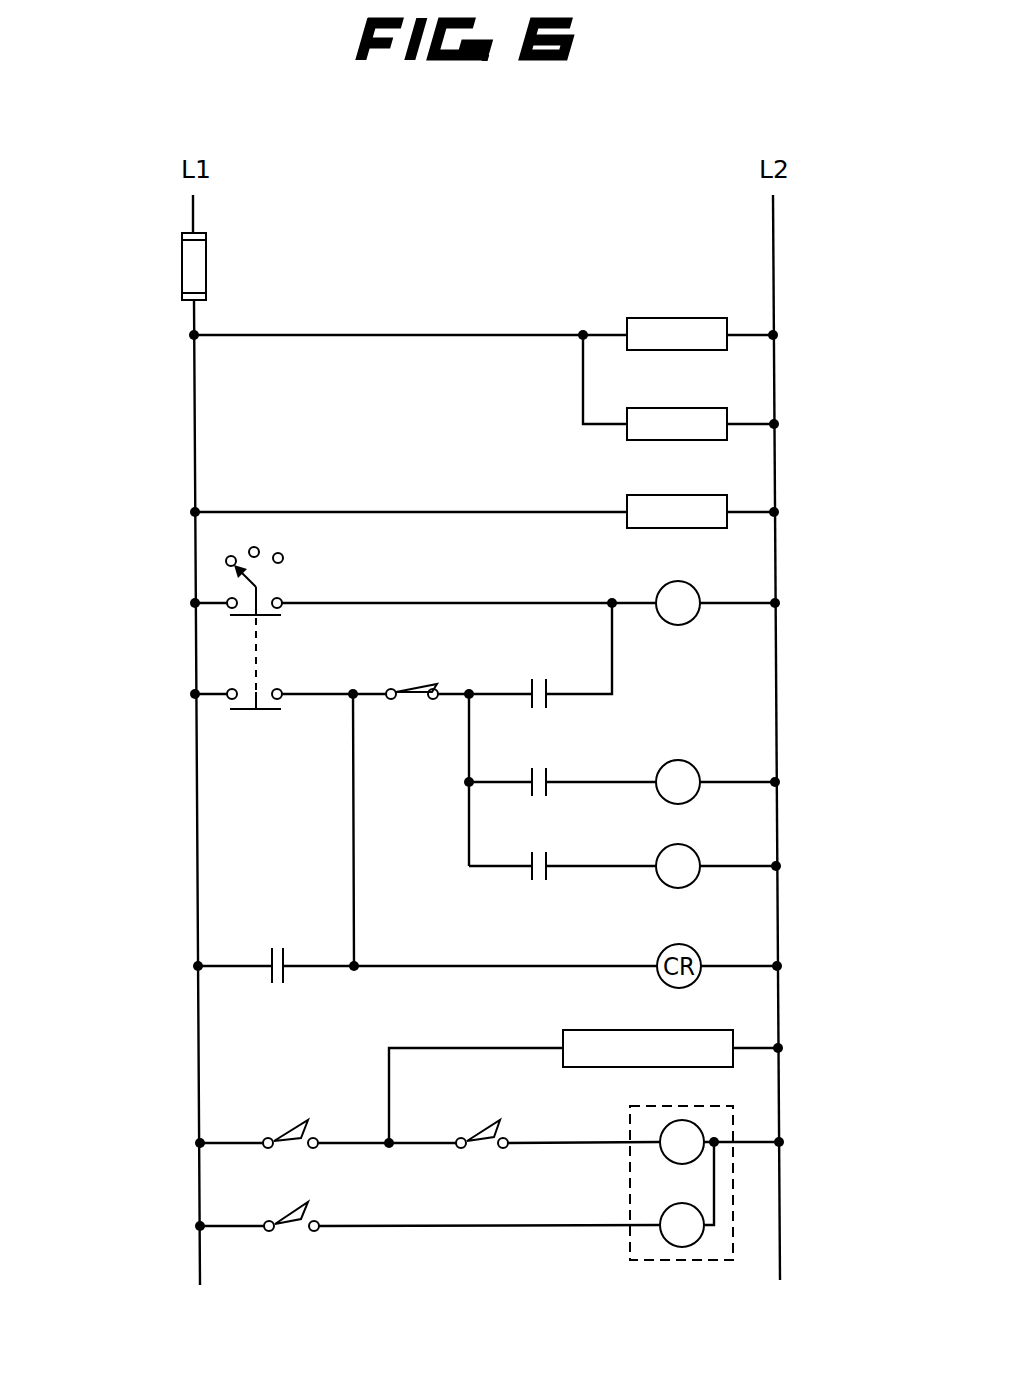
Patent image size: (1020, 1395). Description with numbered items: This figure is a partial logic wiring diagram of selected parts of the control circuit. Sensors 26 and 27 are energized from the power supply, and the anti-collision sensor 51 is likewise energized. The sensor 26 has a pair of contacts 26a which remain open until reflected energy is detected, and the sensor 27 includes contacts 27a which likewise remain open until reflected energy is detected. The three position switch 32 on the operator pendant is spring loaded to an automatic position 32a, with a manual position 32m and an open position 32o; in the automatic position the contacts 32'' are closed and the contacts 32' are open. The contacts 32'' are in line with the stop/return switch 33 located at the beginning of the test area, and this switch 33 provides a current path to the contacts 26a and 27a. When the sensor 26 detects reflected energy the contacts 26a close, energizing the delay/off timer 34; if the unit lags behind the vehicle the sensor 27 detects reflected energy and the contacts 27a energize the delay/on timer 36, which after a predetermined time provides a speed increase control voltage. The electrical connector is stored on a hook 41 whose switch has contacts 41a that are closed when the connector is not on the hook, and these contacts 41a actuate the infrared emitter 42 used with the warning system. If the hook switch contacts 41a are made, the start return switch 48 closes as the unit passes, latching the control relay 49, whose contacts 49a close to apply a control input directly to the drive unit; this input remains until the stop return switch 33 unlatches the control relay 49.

The sensor 26 is at (663, 318).
The sensor 27 is at (642, 408).
The anti-collision sensor 51 is at (645, 494).
The three position switch 32 is at (242, 547).
The open position 32o is at (231, 556).
The automatic position 32a is at (258, 548).
The manual position 32m is at (283, 557).
The contacts 32' is at (337, 573).
The contacts 32'' is at (312, 664).
The stop/return switch 33 is at (418, 690).
The control relay 49 is at (665, 584).
The contacts 26a is at (538, 768).
The timer 34 is at (686, 760).
The contacts 27a is at (538, 852).
The timer 36 is at (688, 846).
The infrared emitter 42 is at (572, 1030).
The hook 41 is at (283, 1133).
The contacts 41a is at (316, 1138).
The start return switch 48 is at (485, 1130).
The contacts 49a is at (682, 1275).